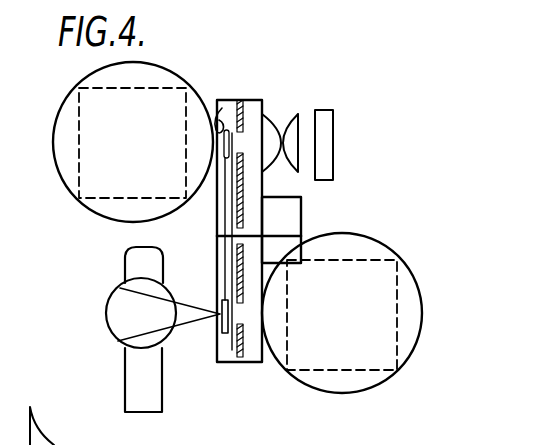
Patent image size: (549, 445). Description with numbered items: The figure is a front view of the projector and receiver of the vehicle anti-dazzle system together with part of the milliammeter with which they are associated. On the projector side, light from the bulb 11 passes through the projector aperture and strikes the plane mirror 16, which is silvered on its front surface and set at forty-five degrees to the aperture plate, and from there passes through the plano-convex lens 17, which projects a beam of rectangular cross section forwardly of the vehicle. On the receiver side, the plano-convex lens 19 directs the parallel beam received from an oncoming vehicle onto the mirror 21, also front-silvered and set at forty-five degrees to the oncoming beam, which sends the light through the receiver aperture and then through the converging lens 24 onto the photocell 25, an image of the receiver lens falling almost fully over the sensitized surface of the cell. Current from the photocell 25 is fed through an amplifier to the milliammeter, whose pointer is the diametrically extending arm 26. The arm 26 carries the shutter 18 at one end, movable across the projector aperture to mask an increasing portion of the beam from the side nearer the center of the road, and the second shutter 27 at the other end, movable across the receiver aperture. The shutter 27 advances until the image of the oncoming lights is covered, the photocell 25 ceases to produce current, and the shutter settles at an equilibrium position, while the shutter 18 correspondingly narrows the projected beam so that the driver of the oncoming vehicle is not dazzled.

The bulb 11 is at (104, 320).
The plane mirror 16 is at (375, 368).
The plano-convex lens 17 is at (358, 250).
The shutter 18 is at (221, 336).
The plano-convex lens 19 is at (118, 209).
The mirror 21 is at (100, 178).
The converging lens 24 is at (284, 130).
The photocell 25 is at (328, 140).
The arm 26 is at (217, 238).
The second shutter 27 is at (222, 108).